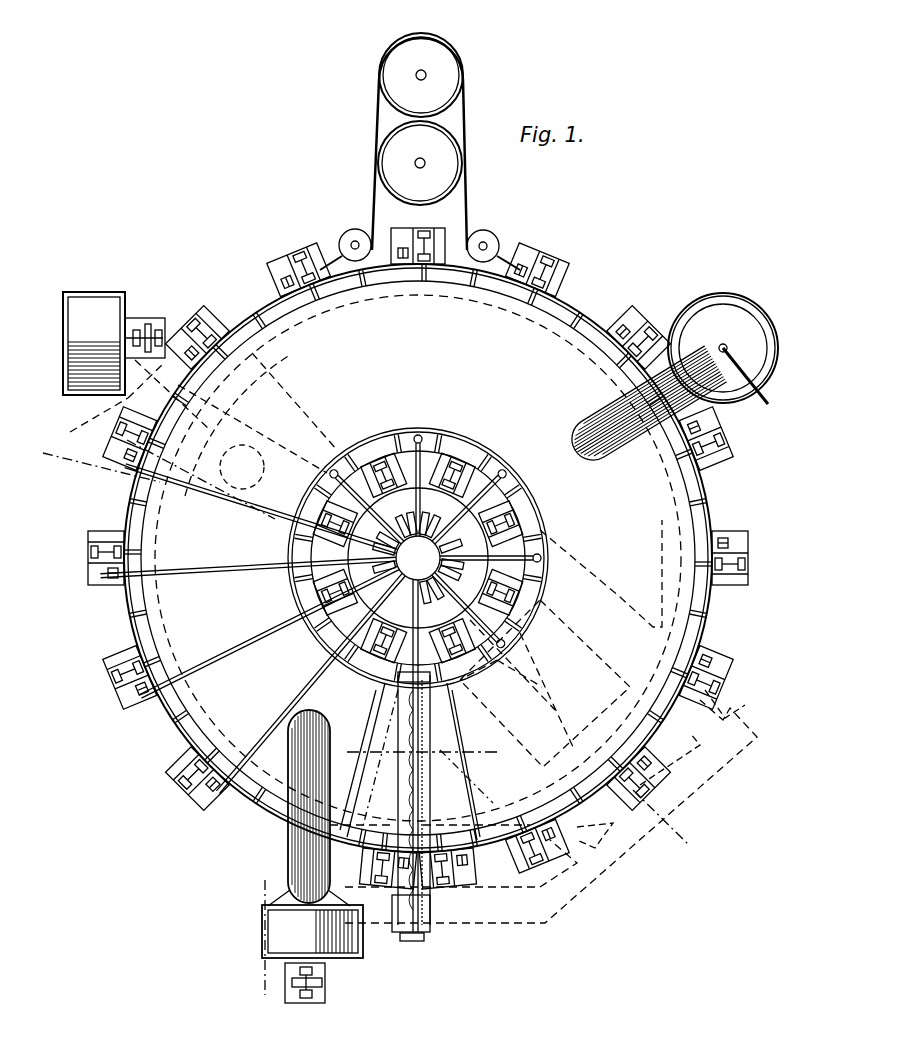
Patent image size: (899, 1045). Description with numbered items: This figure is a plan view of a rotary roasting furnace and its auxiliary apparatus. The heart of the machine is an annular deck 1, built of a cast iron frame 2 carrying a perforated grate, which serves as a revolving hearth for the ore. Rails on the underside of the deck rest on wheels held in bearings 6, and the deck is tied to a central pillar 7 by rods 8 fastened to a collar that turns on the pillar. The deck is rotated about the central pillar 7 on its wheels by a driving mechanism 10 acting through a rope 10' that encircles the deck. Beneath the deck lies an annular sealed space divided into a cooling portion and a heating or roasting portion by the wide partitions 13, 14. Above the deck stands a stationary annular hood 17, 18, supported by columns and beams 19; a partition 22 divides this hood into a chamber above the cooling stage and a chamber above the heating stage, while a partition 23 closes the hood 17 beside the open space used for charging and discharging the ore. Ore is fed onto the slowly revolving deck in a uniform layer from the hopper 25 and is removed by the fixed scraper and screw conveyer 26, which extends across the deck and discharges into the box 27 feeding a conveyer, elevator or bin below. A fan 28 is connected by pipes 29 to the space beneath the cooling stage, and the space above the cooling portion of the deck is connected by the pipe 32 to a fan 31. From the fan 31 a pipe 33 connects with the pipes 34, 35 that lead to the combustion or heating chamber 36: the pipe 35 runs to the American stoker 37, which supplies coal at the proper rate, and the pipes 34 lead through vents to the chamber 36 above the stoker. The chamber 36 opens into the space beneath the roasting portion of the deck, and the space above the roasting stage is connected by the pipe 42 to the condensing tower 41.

The annular deck 1 is at (560, 306).
The cast iron frame 2 is at (72, 462).
The bearings 6 is at (196, 328).
The central pillar 7 is at (450, 545).
The rods 8 is at (466, 512).
The driving mechanism 10 is at (420, 143).
The rope 10' is at (446, 147).
The wide partition 13 is at (262, 400).
The wide partition 14 is at (492, 787).
The stationary annular hood 17 is at (225, 615).
The stationary annular hood 18 is at (593, 498).
The columns and beams 19 is at (252, 500).
The partition 22 is at (305, 433).
The partition 23 is at (358, 768).
The hopper 25 is at (468, 816).
The fixed scraper and screw conveyer 26 is at (410, 925).
The box 27 is at (430, 912).
The fan 28 is at (96, 305).
The pipes 29 is at (483, 716).
The fan 31 is at (270, 936).
The pipe 32 is at (294, 812).
The pipe 33 is at (545, 925).
The pipes 34 is at (601, 841).
The pipe 35 is at (670, 759).
The combustion or heating chamber 36 is at (628, 600).
The American stoker 37 is at (733, 705).
The condensing tower 41 is at (738, 318).
The pipe 42 is at (576, 428).